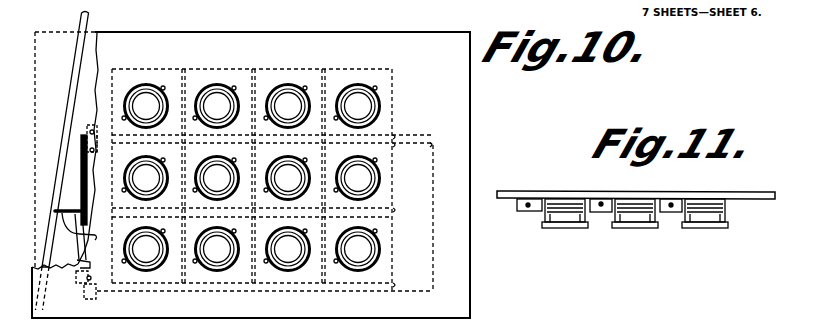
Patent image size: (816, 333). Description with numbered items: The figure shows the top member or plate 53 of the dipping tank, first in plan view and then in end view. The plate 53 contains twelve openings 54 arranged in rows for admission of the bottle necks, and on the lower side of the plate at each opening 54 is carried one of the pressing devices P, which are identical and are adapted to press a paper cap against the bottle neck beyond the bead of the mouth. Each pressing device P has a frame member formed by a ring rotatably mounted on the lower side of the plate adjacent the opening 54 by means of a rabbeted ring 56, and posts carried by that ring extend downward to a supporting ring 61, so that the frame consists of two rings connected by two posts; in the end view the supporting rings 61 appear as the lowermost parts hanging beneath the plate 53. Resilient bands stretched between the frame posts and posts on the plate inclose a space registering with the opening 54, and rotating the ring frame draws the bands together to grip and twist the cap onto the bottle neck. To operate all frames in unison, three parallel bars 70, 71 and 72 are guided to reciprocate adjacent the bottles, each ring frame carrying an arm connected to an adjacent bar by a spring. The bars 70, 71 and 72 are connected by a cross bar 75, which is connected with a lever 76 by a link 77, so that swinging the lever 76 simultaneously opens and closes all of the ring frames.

In FIG. 10, the top member or plate 53 is at (251, 175).
In FIG. 11, the top member or plate 53 is at (747, 199).
In FIG. 10, the openings 54 is at (216, 122).
In FIG. 10, the rabbeted ring 56 is at (338, 76).
In FIG. 10, the supporting ring 61 is at (352, 272).
In FIG. 11, the supporting ring 61 is at (566, 229).
In FIG. 10, the parallel bar 70 is at (88, 130).
In FIG. 11, the parallel bar 70 is at (670, 212).
In FIG. 10, the parallel bar 71 is at (85, 192).
In FIG. 11, the parallel bar 71 is at (601, 199).
In FIG. 10, the parallel bar 72 is at (94, 296).
In FIG. 11, the parallel bar 72 is at (527, 209).
In FIG. 10, the cross bar 75 is at (72, 270).
In FIG. 10, the lever 76 is at (78, 66).
In FIG. 10, the link 77 is at (92, 236).
In FIG. 11, the pressing devices P is at (636, 230).